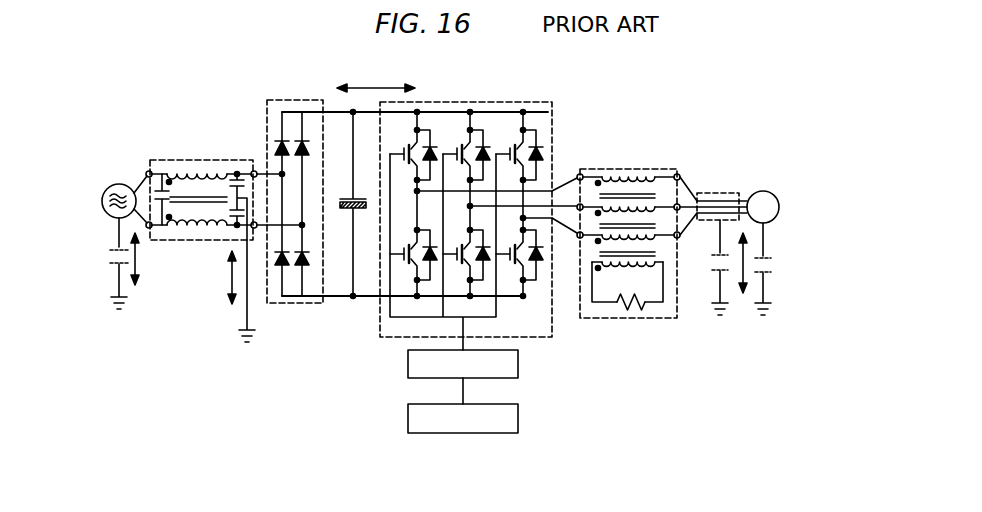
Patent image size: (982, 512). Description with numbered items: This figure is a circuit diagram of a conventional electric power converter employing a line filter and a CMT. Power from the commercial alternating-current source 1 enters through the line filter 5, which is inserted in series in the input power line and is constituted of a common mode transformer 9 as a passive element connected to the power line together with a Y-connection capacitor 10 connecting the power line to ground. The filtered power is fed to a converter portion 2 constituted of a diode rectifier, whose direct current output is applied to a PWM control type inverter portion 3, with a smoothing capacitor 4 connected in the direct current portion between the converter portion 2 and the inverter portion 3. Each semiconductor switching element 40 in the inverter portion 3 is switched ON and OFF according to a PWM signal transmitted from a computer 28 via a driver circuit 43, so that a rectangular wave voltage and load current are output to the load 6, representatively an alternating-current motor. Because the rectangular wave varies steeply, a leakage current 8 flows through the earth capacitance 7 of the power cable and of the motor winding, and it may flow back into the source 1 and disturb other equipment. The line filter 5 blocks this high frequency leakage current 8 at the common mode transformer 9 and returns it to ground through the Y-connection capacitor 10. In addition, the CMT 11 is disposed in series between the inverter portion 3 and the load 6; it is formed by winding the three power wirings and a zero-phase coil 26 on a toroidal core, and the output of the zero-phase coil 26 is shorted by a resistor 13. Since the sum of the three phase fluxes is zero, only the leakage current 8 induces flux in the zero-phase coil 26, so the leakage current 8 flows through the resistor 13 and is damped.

The commercial alternating-current source 1 is at (119, 184).
The converter portion 2 is at (300, 100).
The inverter portion 3 is at (478, 209).
The smoothing capacitor 4 is at (352, 210).
The line filter 5 is at (163, 162).
The load 6 is at (764, 191).
The earth capacitance 7 is at (110, 275).
The leakage current 8 is at (141, 266).
The common mode transformer 9 is at (191, 170).
The Y-connection capacitor 10 is at (239, 170).
The CMT 11 is at (628, 247).
The resistor 13 is at (623, 305).
The zero-phase coil 26 is at (640, 277).
The computer 28 is at (408, 412).
The semiconductor switching element 40 is at (512, 130).
The driver circuit 43 is at (408, 363).